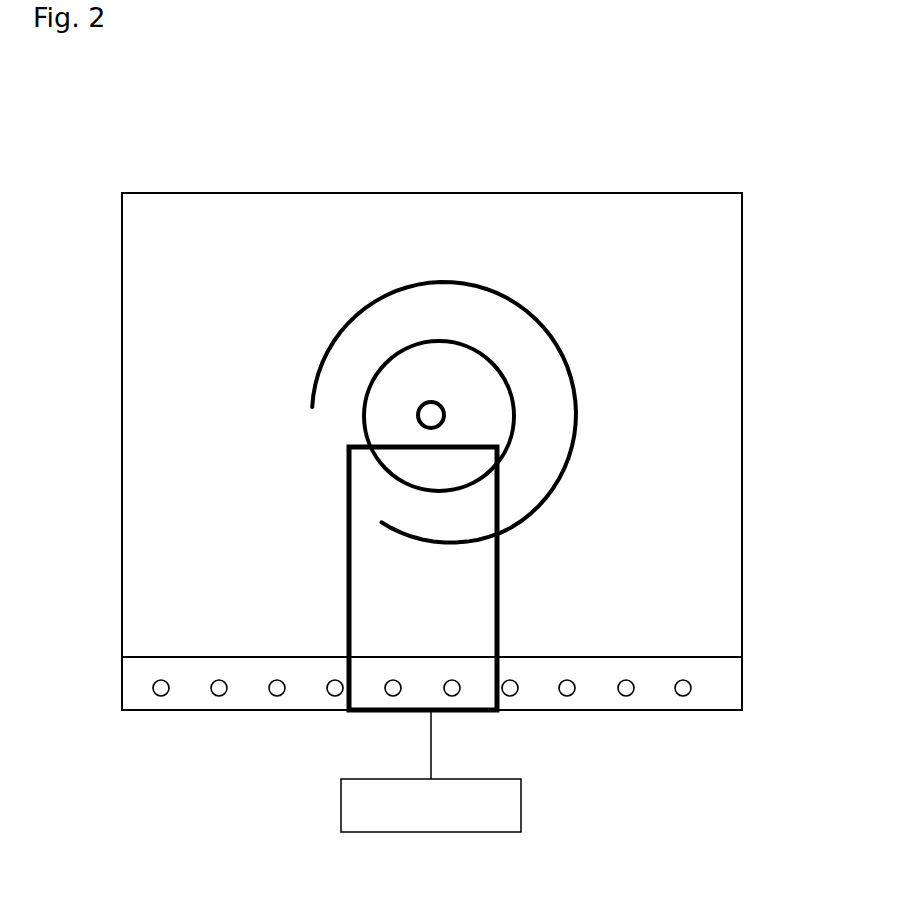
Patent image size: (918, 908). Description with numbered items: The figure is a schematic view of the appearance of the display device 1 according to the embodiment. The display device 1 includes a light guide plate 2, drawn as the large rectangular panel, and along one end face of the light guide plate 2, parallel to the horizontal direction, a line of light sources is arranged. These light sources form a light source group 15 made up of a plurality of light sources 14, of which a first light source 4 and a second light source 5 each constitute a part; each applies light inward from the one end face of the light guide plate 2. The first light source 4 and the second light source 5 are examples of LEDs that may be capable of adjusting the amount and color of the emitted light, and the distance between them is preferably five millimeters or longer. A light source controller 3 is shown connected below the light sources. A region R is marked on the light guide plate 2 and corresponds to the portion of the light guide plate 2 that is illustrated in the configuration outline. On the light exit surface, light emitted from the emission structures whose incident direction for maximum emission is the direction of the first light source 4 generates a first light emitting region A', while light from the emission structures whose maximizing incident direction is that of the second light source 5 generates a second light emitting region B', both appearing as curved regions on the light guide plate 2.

The display device 1 is at (153, 113).
The light guide plate 2 is at (598, 193).
The light source controller 3 is at (443, 832).
The first light source 4 is at (392, 697).
The second light source 5 is at (453, 697).
The light sources 14 is at (160, 697).
The light source group 15 is at (742, 683).
The region R is at (347, 558).
The first light emitting region A' is at (439, 310).
The second light emitting region B' is at (555, 412).